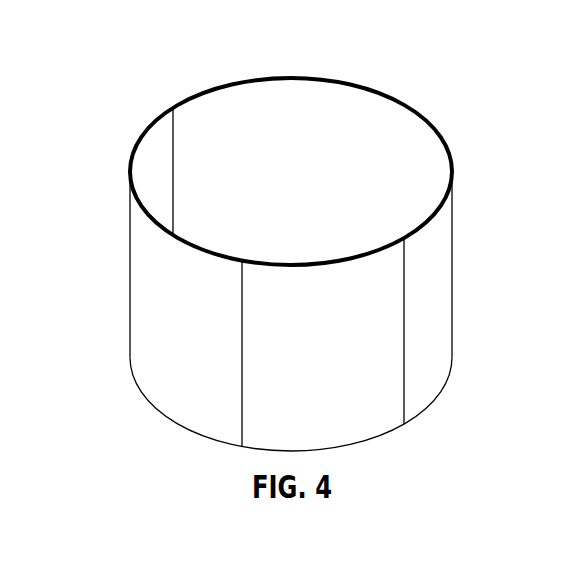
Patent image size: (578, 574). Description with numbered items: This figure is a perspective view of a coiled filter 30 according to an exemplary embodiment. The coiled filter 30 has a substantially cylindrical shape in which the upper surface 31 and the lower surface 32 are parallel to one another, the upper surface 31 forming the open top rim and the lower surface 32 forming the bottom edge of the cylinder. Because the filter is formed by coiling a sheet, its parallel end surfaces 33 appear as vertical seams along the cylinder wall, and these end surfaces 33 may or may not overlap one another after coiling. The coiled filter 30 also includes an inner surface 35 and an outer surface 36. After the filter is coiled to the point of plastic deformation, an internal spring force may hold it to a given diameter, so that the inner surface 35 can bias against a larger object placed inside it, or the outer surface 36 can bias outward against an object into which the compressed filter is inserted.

The coiled filter 30 is at (292, 254).
The upper surface 31 is at (131, 159).
The lower surface 32 is at (189, 429).
The parallel end surfaces 33 is at (240, 297).
The inner surface 35 is at (253, 108).
The outer surface 36 is at (162, 316).